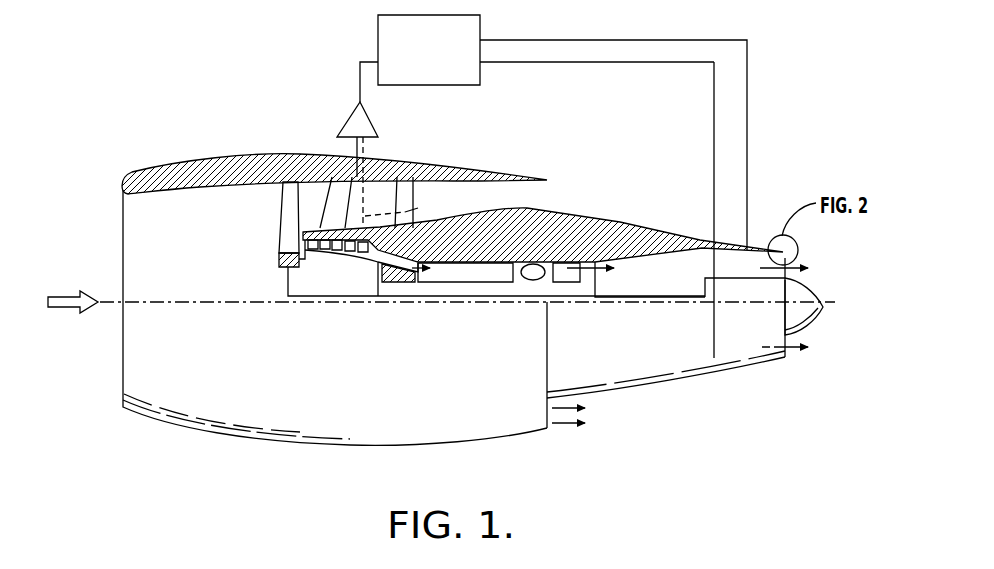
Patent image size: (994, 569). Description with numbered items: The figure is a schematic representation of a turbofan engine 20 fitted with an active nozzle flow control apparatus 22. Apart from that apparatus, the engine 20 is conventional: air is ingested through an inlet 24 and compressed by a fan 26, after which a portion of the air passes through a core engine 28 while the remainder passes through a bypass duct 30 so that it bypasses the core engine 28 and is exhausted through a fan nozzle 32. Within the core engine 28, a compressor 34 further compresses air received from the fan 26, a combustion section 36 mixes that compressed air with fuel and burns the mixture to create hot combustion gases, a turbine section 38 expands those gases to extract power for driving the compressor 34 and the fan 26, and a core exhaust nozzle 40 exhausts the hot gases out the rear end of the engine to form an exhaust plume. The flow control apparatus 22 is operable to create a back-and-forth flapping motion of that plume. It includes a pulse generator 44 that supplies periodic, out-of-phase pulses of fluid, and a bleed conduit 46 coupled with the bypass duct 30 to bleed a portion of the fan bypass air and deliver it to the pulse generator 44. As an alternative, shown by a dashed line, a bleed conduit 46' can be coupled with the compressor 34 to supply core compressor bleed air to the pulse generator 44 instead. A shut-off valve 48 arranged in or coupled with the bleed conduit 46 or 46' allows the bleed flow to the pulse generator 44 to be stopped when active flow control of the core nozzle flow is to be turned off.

The turbofan engine 20 is at (173, 107).
The active nozzle flow control apparatus 22 is at (342, 50).
The inlet 24 is at (141, 205).
The fan 26 is at (275, 223).
The core engine 28 is at (371, 266).
The bypass duct 30 is at (383, 192).
The fan nozzle 32 is at (548, 179).
The compressor 34 is at (340, 257).
The combustion section 36 is at (523, 285).
The turbine section 38 is at (612, 302).
The core exhaust nozzle 40 is at (784, 364).
The pulse generator 44 is at (462, 32).
The bleed conduit 46 is at (340, 167).
The bleed conduit 46' is at (434, 196).
The shut-off valve 48 is at (351, 127).